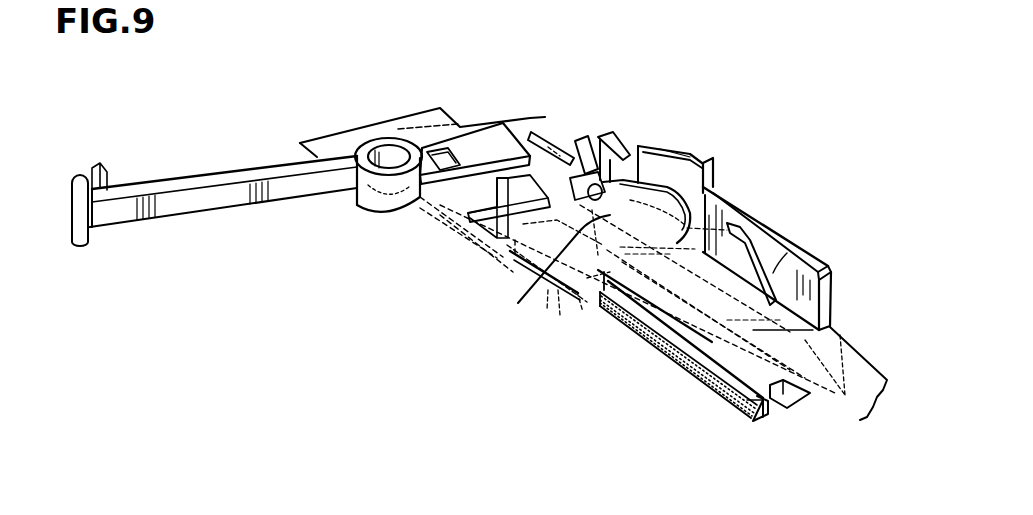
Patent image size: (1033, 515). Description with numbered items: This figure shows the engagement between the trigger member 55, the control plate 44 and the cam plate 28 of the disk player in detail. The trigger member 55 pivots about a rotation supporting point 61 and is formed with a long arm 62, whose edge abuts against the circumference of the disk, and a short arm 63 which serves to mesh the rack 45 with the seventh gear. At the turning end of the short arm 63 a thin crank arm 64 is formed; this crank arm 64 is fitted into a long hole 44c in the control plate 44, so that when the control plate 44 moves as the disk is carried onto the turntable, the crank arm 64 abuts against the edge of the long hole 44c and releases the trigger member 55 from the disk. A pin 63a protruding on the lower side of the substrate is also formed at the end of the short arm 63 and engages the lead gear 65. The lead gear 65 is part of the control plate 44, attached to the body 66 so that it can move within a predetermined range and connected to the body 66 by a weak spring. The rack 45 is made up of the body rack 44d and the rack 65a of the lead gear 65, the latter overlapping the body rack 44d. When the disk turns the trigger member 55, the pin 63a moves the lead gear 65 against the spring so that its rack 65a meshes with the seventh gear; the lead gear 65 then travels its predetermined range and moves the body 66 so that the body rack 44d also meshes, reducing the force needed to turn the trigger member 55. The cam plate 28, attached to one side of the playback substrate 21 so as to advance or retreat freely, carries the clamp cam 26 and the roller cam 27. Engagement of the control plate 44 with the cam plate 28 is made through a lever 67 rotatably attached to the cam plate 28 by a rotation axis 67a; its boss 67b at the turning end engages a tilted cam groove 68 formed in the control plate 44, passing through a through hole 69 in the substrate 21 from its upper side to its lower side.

The playback substrate 21 is at (340, 135).
The clamp cam 26 is at (710, 160).
The roller cam 27 is at (808, 250).
The cam plate 28 is at (757, 211).
The control plate 44 is at (450, 345).
The long hole 44c is at (430, 213).
The body rack 44d is at (657, 355).
The rack 45 is at (553, 420).
The trigger member 55 is at (205, 172).
The rotation supporting point 61 is at (380, 222).
The long arm 62 is at (153, 226).
The short arm 63 is at (460, 147).
The pin 63a is at (515, 250).
The crank arm 64 is at (534, 196).
The lead gear 65 is at (547, 353).
The rack of the lead gear 65a is at (735, 400).
The body 66 is at (556, 290).
The lever 67 is at (641, 175).
The rotation axis 67a is at (698, 143).
The boss 67b is at (612, 182).
The tilted cam groove 68 is at (566, 134).
The through hole 69 is at (548, 268).